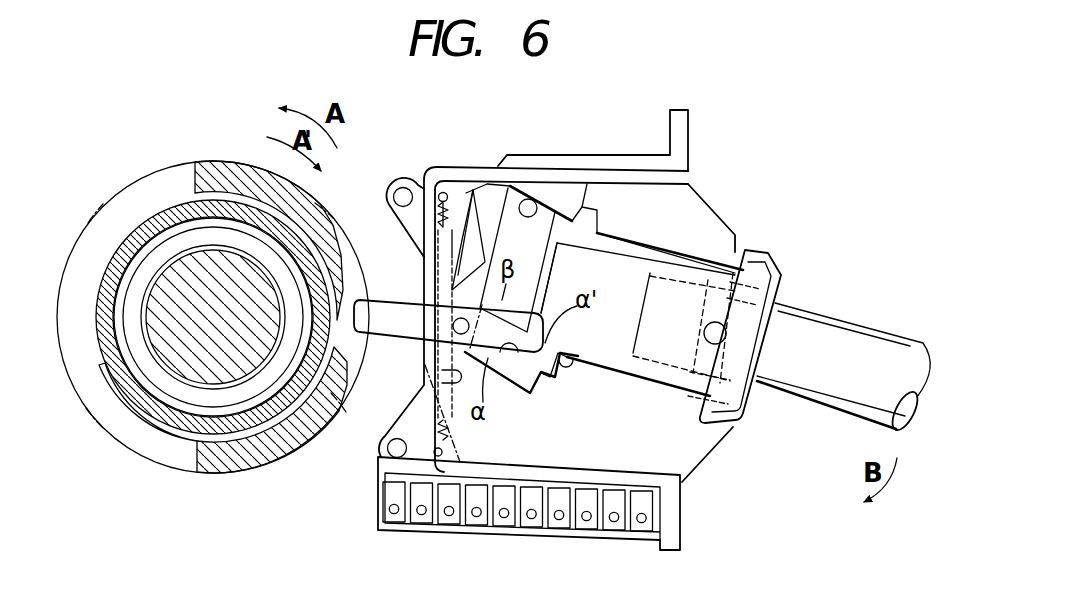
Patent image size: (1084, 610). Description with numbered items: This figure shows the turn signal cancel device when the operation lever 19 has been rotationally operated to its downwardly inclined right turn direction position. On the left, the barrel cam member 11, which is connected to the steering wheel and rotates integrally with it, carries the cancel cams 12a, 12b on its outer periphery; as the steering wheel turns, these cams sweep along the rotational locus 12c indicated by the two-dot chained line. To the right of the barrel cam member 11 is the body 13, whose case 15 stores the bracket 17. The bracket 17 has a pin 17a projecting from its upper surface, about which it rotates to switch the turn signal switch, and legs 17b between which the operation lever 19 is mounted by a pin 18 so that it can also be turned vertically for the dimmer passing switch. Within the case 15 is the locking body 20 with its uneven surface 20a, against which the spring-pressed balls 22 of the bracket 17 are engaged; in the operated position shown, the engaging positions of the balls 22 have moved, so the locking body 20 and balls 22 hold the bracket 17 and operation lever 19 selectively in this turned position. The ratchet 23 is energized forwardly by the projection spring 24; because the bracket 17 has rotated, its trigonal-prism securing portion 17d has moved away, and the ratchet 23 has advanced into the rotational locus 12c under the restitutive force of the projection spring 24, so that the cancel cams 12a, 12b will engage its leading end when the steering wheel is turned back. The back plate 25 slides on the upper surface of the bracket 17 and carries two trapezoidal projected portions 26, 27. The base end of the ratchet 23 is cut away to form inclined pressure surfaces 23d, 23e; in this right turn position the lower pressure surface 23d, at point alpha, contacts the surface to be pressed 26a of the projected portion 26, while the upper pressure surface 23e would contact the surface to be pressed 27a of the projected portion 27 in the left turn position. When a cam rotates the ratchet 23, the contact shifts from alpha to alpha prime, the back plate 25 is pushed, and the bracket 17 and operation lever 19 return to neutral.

The barrel cam member 11 is at (137, 418).
The cancel cam 12a is at (213, 470).
The cancel cam 12b is at (212, 176).
The rotational locus 12c is at (133, 183).
The body 13 is at (625, 157).
The case 15 is at (707, 449).
The bracket 17 is at (653, 244).
The pin 17a is at (718, 330).
The legs 17b is at (698, 267).
The securing portion 17d is at (445, 194).
The pin 18 is at (716, 457).
The operation lever 19 is at (790, 376).
The locking body 20 is at (436, 487).
The uneven surface 20a is at (447, 378).
The balls 22 is at (471, 186).
The ratchet 23 is at (351, 312).
The pressure surface 23d is at (455, 321).
The pressure surface 23e is at (546, 268).
The projection spring 24 is at (469, 478).
The back plate 25 is at (493, 188).
The projected portion 26 is at (531, 396).
The surface to be pressed 26a is at (509, 353).
The projected portion 27 is at (568, 195).
The surface to be pressed 27a is at (543, 190).